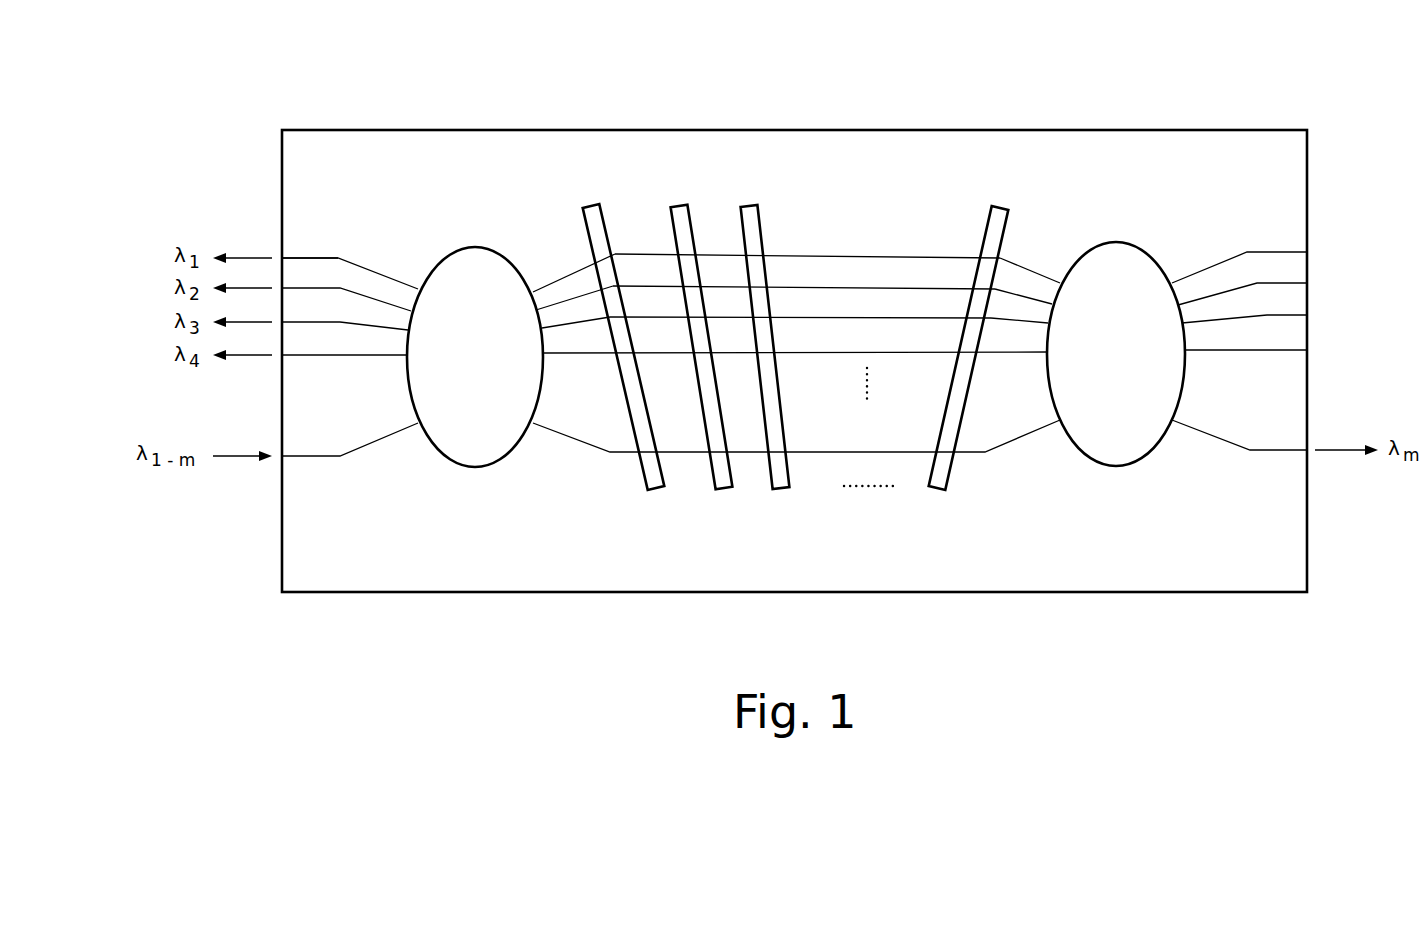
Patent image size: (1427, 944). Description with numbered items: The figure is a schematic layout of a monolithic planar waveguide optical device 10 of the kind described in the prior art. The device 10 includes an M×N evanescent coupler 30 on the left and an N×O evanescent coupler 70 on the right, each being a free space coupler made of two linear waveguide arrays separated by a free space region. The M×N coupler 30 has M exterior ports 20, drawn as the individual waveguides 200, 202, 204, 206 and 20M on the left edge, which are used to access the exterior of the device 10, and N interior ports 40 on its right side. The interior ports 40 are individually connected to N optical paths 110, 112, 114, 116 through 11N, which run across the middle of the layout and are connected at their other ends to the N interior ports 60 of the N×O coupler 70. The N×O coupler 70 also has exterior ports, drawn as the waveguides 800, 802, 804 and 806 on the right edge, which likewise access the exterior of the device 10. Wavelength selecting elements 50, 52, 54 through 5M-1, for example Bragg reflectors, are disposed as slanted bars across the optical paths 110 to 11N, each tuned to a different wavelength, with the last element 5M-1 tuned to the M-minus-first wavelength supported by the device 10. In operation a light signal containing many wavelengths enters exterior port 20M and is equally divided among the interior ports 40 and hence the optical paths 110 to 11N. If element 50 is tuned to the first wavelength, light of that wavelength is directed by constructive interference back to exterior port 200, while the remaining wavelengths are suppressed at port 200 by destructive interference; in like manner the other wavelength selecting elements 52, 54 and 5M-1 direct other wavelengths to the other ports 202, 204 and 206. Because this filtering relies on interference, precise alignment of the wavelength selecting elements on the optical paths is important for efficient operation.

The optical device 10 is at (932, 94).
The exterior ports 20 is at (396, 246).
The M×N evanescent coupler 30 is at (477, 268).
The interior ports 40 is at (551, 246).
The wavelength selecting element 50 is at (656, 492).
The wavelength selecting element 52 is at (724, 492).
The wavelength selecting element 54 is at (781, 492).
The wavelength selecting element 5M-1 is at (937, 492).
The interior ports 60 is at (1037, 246).
The N×O evanescent coupler 70 is at (1118, 263).
The optical path 110 is at (807, 244).
The optical path 112 is at (804, 276).
The optical path 114 is at (800, 306).
The optical path 116 is at (795, 341).
The optical path 11N is at (796, 436).
The exterior port 200 is at (350, 262).
The exterior port 202 is at (346, 288).
The exterior port 204 is at (345, 314).
The exterior port 206 is at (344, 343).
The exterior port 20M is at (350, 440).
The exterior port 800 is at (1239, 340).
The exterior port 802 is at (1242, 282).
The exterior port 804 is at (1244, 307).
The exterior port 806 is at (1246, 339).